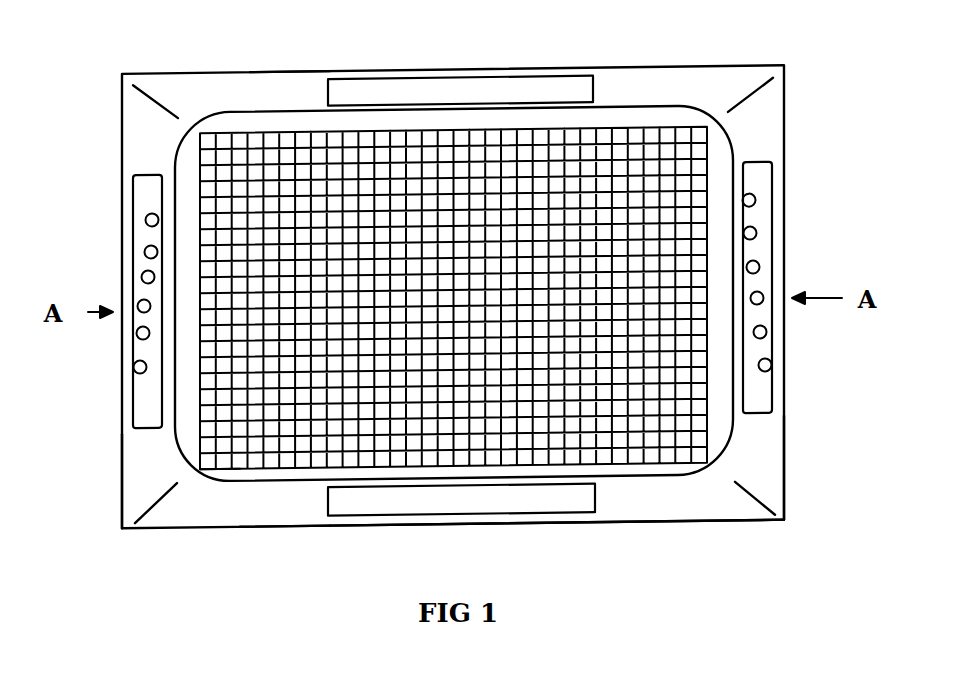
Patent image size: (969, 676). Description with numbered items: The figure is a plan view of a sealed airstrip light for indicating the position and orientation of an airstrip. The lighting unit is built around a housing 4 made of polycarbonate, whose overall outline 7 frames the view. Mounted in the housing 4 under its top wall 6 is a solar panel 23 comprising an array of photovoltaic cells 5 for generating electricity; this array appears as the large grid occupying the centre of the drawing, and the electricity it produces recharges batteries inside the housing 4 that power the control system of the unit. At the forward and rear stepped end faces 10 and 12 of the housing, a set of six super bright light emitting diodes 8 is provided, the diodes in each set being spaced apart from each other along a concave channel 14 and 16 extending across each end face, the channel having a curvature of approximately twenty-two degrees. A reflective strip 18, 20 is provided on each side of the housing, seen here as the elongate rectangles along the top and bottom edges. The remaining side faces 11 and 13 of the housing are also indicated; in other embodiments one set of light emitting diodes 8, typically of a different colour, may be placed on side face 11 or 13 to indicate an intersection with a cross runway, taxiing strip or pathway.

The housing 4 is at (647, 523).
The photovoltaic cells 5 is at (627, 410).
The top wall 6 is at (210, 117).
The housing 7 is at (680, 43).
The light emitting diodes 8 is at (143, 333).
The forward stepped end face 10 is at (767, 428).
The side face 11 is at (273, 123).
The rear stepped end face 12 is at (142, 452).
The side face 13 is at (270, 502).
The concave channel 14 is at (762, 380).
The concave channel 16 is at (147, 397).
The reflective strip 18 is at (433, 93).
The reflective strip 20 is at (442, 497).
The solar panel 23 is at (238, 468).